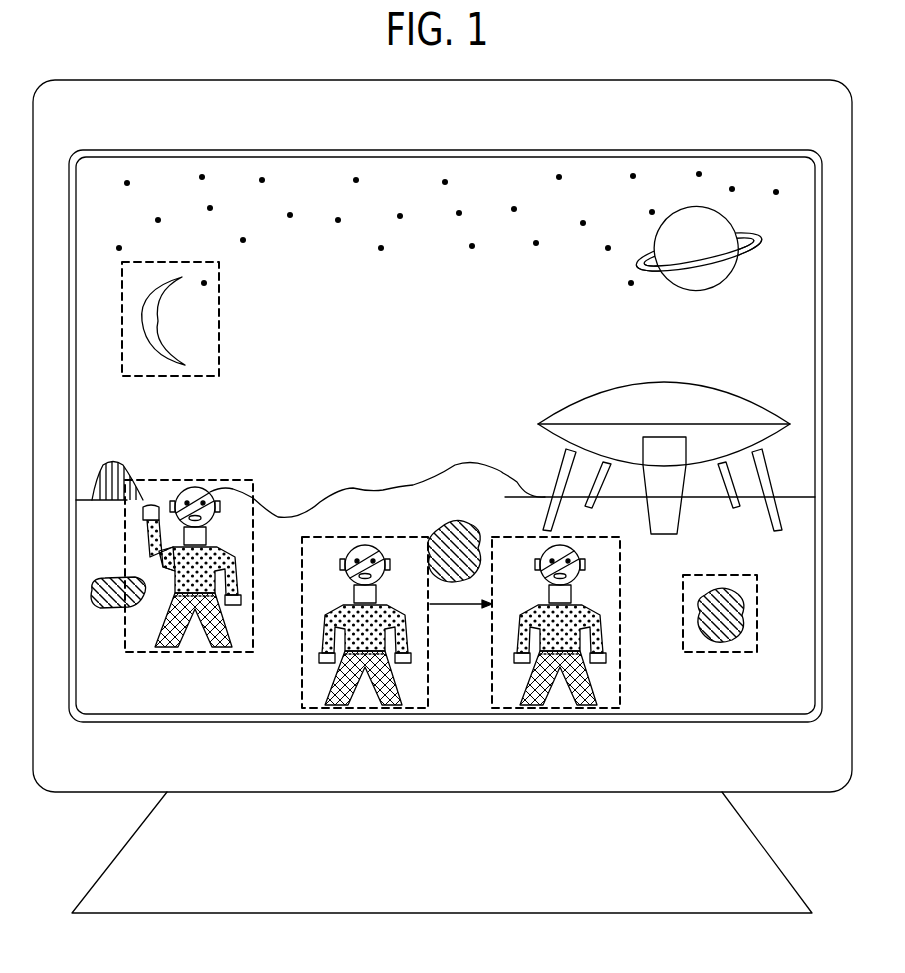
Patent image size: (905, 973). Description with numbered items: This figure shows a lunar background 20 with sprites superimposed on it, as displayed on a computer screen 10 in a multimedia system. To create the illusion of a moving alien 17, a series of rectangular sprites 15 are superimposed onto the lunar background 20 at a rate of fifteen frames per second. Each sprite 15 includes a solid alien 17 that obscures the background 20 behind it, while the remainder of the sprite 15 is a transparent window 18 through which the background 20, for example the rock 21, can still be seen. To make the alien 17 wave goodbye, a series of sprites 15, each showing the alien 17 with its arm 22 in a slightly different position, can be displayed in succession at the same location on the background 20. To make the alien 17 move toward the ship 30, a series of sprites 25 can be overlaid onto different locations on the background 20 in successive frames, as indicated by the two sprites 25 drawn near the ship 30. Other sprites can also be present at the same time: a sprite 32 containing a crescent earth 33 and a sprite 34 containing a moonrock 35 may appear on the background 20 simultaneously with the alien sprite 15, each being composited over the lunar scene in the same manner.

The computer screen 10 is at (750, 150).
The rectangular sprite 15 is at (243, 480).
The alien 17 is at (163, 538).
The transparent window 18 is at (249, 538).
The lunar background 20 is at (413, 444).
The rock 21 is at (96, 609).
The arm 22 is at (130, 538).
The sprite 25 is at (375, 537).
The ship 30 is at (709, 382).
The sprite 32 is at (221, 297).
The crescent earth 33 is at (158, 322).
The sprite 34 is at (745, 612).
The moonrock 35 is at (690, 653).